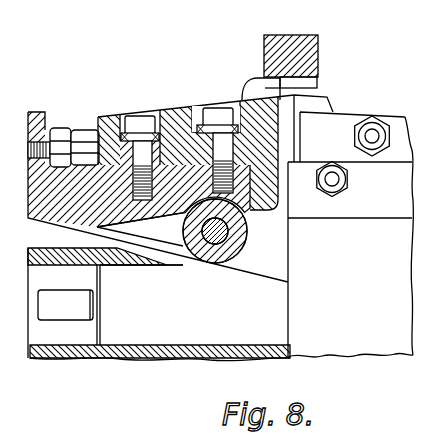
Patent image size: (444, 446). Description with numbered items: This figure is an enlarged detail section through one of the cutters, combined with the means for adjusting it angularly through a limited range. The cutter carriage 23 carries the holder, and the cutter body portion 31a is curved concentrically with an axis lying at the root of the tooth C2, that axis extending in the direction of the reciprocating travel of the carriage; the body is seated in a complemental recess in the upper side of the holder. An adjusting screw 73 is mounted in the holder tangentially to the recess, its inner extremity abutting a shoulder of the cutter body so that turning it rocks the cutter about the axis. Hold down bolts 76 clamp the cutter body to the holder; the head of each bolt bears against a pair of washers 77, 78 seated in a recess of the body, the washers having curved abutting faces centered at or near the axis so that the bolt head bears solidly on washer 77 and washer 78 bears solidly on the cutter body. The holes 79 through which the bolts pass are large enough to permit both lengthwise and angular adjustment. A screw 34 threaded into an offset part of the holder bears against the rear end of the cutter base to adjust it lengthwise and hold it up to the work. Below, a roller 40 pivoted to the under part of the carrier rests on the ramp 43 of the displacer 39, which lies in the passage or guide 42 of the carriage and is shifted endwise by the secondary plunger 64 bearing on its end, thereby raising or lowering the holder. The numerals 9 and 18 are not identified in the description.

The adjustment dimension 9 is at (200, 103).
The guide block 18 is at (310, 52).
The cutter carriage 23 is at (28, 258).
The body portion of the cutter 31a is at (178, 112).
The screw 34 is at (73, 128).
The displacer 39 is at (212, 313).
The roller 40 is at (197, 254).
The passage or guide 42 is at (75, 356).
The ramp or cam surface 43 is at (258, 276).
The secondary plunger 64 is at (48, 303).
The adjusting screw 73 is at (374, 130).
The hold down bolt 76 is at (213, 104).
The washer 77 is at (118, 114).
The washer 78 is at (30, 196).
The hole 79 is at (136, 186).
The cutter tooth C2 is at (282, 80).